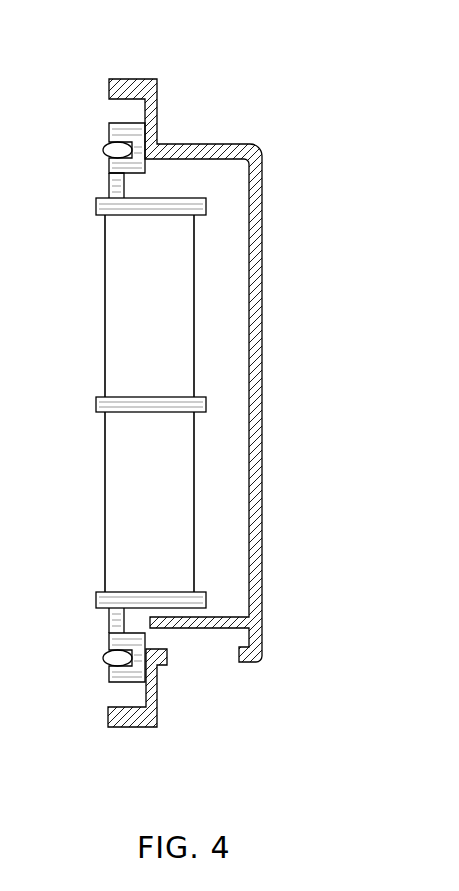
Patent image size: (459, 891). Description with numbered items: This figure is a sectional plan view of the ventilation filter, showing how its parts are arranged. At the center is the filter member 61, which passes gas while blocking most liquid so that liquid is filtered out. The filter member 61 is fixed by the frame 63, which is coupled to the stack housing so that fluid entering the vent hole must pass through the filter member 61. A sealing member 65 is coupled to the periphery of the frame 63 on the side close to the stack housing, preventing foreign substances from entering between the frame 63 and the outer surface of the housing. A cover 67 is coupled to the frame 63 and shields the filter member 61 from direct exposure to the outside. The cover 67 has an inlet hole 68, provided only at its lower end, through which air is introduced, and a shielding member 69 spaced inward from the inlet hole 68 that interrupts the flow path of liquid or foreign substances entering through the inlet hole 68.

The filter member 61 is at (115, 497).
The frame 63 is at (112, 187).
The sealing member 65 is at (105, 150).
The cover 67 is at (127, 87).
The inlet hole 68 is at (208, 648).
The shielding member 69 is at (183, 628).